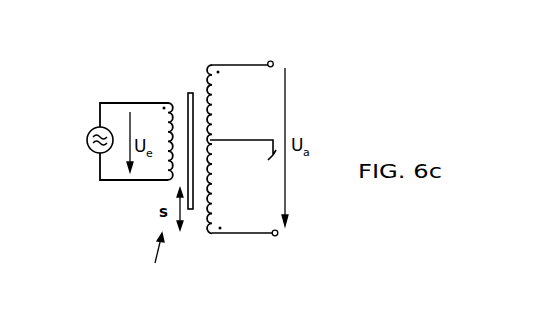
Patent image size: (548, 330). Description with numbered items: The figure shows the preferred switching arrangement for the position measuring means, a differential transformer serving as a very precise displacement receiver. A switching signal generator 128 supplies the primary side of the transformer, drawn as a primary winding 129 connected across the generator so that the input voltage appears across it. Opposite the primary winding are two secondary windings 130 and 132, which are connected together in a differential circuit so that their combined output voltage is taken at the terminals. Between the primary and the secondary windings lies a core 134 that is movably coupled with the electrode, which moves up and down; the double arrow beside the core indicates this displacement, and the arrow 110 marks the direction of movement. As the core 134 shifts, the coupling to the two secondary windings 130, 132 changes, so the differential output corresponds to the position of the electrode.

The direction of movement arrow 110 is at (158, 261).
The switching signal generator 128 is at (89, 150).
The primary winding 129 is at (170, 135).
The secondary winding 130 is at (213, 85).
The secondary winding 132 is at (217, 218).
The core 134 is at (189, 99).